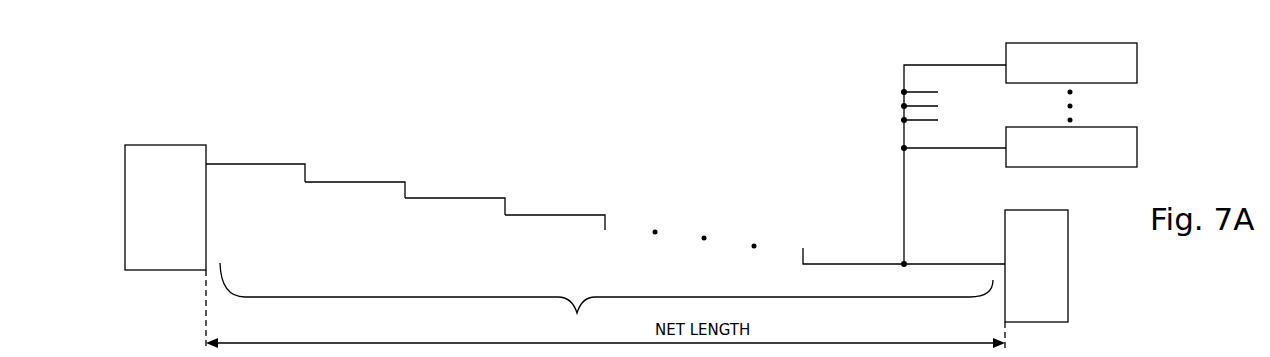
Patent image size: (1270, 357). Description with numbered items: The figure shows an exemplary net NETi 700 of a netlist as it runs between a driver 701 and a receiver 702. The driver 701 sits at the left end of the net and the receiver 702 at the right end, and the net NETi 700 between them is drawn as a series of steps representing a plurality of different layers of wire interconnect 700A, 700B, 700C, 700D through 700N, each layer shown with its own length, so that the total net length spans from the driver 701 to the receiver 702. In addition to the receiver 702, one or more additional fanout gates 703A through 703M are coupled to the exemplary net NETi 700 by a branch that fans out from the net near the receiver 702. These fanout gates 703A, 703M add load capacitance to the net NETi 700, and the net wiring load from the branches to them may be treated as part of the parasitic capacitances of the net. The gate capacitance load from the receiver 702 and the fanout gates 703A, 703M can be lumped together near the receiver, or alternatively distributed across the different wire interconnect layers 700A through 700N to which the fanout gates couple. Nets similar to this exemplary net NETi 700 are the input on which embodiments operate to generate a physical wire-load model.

The driver 701 is at (125, 160).
The receiver 702 is at (1068, 267).
The fanout gate FOGM 703M is at (1137, 70).
The fanout gate FOG1 703A is at (1137, 155).
The layer of wire interconnect 700A is at (255, 151).
The layer of wire interconnect 700B is at (355, 168).
The layer of wire interconnect 700C is at (455, 185).
The layer of wire interconnect 700D is at (555, 201).
The layer of wire interconnect 700N is at (904, 243).
The net NETi 700 is at (606, 293).